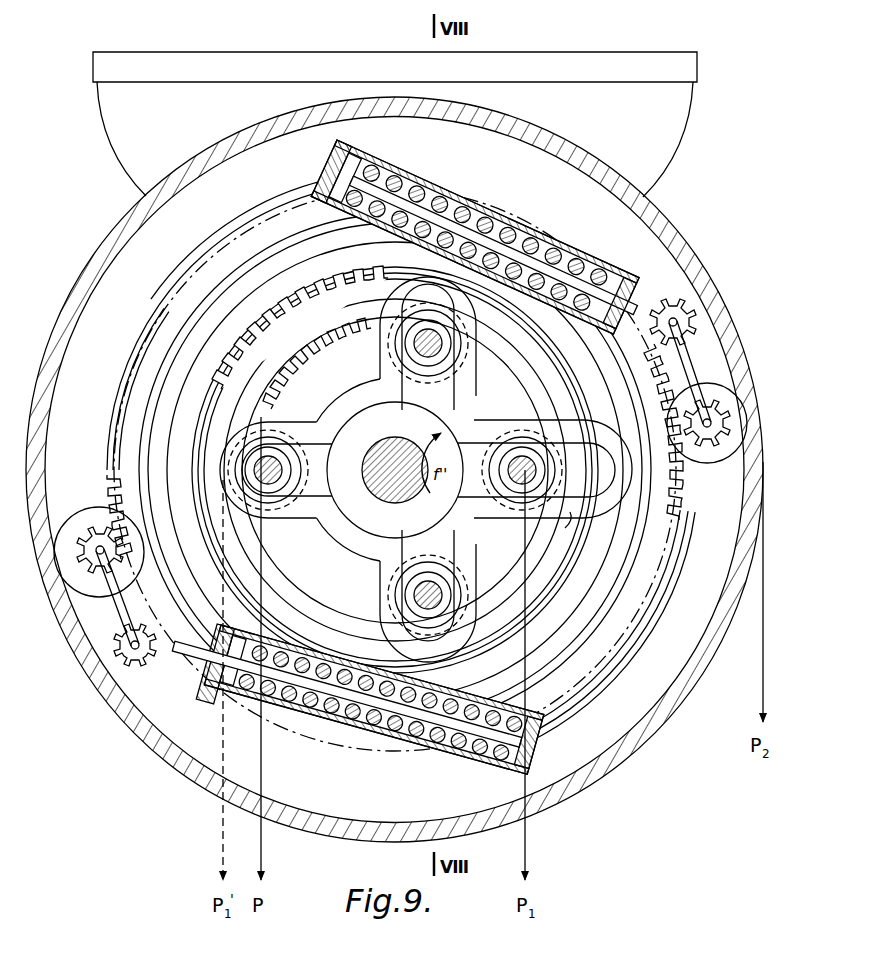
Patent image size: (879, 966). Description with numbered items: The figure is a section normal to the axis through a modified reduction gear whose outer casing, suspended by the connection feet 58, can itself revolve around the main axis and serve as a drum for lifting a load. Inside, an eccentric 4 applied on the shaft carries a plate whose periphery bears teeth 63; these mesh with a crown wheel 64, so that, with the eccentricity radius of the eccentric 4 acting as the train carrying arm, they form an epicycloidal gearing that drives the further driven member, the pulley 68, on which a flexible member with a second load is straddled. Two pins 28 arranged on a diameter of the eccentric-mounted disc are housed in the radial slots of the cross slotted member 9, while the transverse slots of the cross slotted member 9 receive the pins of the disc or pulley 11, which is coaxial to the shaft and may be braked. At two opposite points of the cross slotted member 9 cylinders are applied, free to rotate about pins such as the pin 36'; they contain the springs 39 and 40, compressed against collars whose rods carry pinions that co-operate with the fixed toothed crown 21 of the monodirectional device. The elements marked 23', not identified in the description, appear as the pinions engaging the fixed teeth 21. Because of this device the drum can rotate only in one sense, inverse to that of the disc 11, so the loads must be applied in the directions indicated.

The connection feet 58 is at (612, 63).
The spring 40 is at (580, 258).
The pinion gears 23' is at (405, 518).
The pins 28 is at (430, 350).
The crown wheel 64 is at (272, 320).
The teeth 63 is at (305, 362).
The disc or pulley 11 is at (337, 352).
The pulley 68 is at (235, 417).
The fixed toothed crown 21 is at (110, 480).
The eccentric 4 is at (415, 475).
The cross slotted member 9 is at (562, 529).
The spring 39 is at (318, 718).
The pin 36' is at (461, 756).